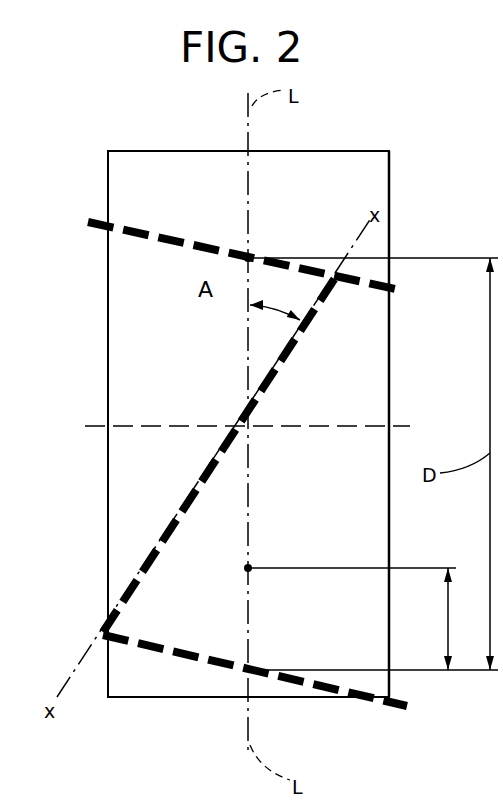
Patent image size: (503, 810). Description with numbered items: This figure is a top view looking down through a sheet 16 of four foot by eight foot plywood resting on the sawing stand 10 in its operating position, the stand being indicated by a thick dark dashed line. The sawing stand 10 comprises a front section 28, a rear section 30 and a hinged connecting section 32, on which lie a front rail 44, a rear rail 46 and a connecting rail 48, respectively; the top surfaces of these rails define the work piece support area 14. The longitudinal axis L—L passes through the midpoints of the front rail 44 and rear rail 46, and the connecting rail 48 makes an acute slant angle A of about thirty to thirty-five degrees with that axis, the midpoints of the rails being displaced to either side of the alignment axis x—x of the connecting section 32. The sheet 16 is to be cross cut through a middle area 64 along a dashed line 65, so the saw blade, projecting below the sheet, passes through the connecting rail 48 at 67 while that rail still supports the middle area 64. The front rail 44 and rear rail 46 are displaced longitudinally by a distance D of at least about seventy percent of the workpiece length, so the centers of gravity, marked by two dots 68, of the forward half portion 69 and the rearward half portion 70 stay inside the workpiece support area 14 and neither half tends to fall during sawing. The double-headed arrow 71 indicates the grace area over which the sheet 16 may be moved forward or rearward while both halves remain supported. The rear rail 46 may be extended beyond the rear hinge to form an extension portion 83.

The sawing stand 10 is at (97, 232).
The work piece support area 14 is at (179, 475).
The sheet 16 is at (108, 340).
The front section 28 is at (148, 655).
The rear section 30 is at (138, 230).
The connecting section 32 is at (160, 528).
The front rail 44 is at (188, 665).
The rear rail 46 is at (168, 232).
The connecting rail 48 is at (183, 500).
The middle area 64 is at (122, 436).
The dashed line 65 is at (148, 424).
The saw blade pass-through point 67 is at (256, 434).
The dots 68 is at (251, 256).
The forward half portion 69 is at (313, 549).
The rearward half portion 70 is at (318, 200).
The grace area 71 is at (448, 612).
The extension portion 83 is at (355, 287).